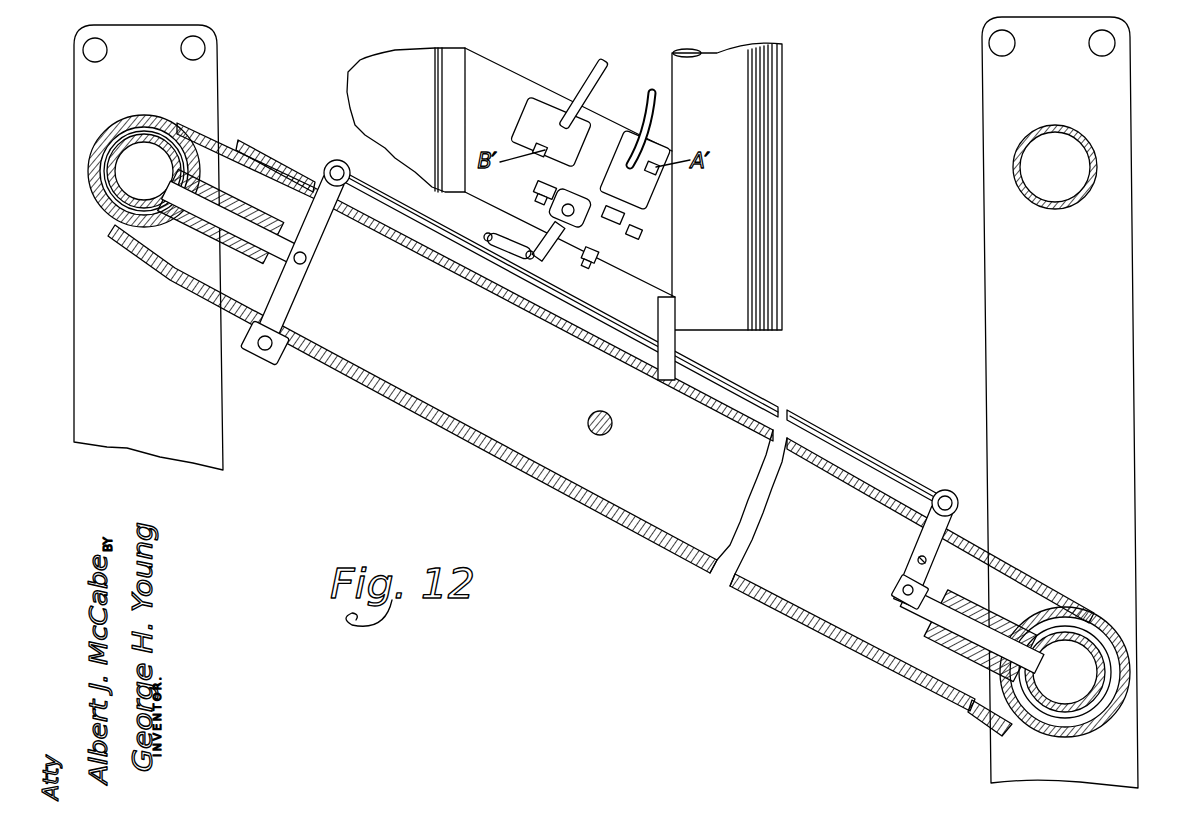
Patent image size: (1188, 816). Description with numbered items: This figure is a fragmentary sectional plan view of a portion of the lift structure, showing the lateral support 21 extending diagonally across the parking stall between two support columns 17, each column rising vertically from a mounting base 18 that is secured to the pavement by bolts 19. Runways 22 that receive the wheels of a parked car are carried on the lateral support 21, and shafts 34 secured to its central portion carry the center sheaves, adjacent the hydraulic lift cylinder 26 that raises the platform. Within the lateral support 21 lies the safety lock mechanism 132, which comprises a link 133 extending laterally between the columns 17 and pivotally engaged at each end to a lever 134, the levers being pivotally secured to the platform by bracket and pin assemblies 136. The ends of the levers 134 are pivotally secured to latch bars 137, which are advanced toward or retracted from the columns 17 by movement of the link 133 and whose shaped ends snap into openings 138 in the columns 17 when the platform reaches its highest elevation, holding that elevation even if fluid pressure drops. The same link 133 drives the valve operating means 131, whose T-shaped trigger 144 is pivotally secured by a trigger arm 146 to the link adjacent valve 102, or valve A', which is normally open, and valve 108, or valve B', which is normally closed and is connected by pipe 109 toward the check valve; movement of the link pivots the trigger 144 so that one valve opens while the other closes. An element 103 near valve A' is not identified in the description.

The support columns 17 is at (1095, 177).
The mounting bases 18 is at (215, 428).
The bolts 19 is at (187, 51).
The lateral support 21 is at (633, 520).
The runways 22 is at (372, 108).
The hydraulic lift cylinder 26 is at (768, 172).
The shafts 34 is at (613, 424).
The valve 102 is at (628, 215).
The curved rod 103 is at (643, 132).
The valve 108 is at (547, 104).
The pipe 109 is at (592, 66).
The valve operating means 131 is at (552, 240).
The safety lock mechanism 132 is at (578, 305).
The link 133 is at (433, 227).
The lever 134 is at (312, 241).
The bracket and pin assemblies 136 is at (278, 352).
The latch bars 137 is at (244, 232).
The openings 138 is at (162, 197).
The T-shaped trigger 144 is at (606, 250).
The trigger arm 146 is at (498, 232).